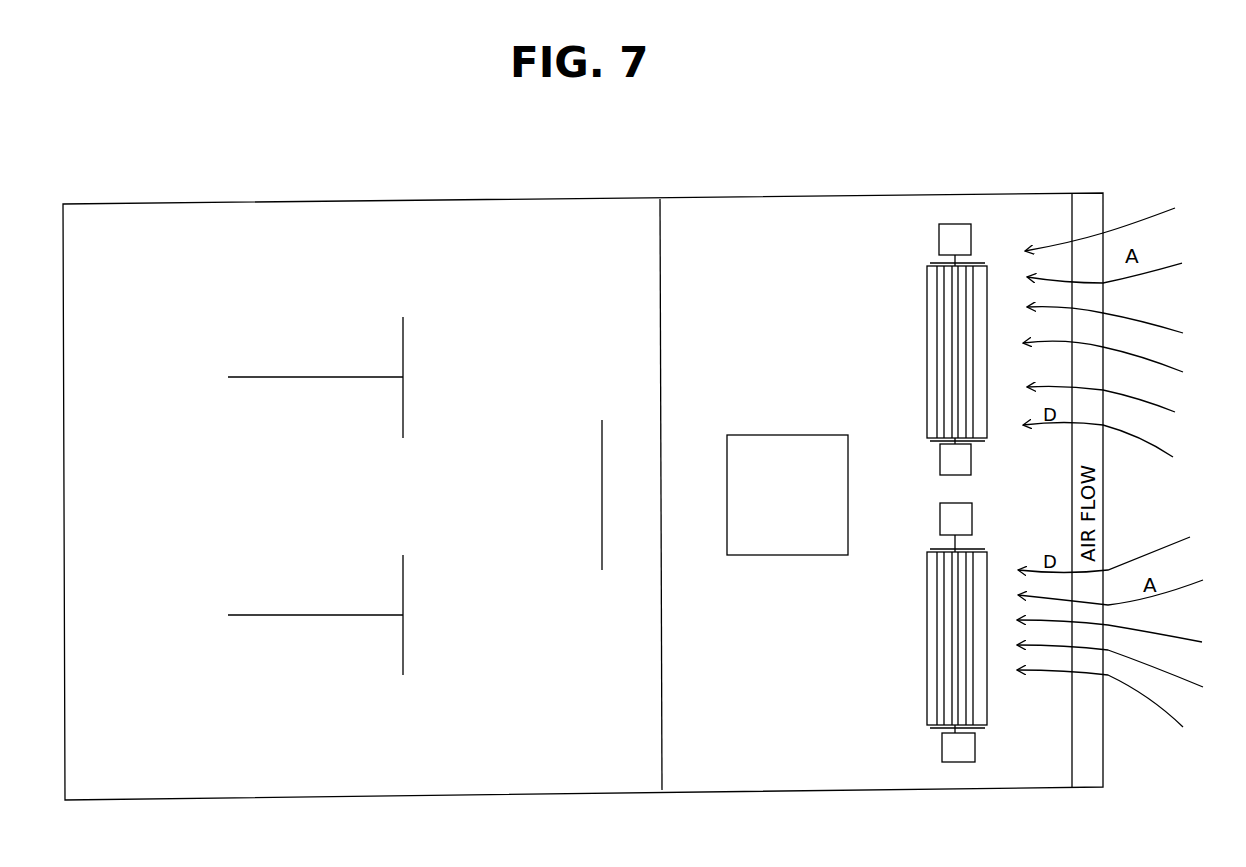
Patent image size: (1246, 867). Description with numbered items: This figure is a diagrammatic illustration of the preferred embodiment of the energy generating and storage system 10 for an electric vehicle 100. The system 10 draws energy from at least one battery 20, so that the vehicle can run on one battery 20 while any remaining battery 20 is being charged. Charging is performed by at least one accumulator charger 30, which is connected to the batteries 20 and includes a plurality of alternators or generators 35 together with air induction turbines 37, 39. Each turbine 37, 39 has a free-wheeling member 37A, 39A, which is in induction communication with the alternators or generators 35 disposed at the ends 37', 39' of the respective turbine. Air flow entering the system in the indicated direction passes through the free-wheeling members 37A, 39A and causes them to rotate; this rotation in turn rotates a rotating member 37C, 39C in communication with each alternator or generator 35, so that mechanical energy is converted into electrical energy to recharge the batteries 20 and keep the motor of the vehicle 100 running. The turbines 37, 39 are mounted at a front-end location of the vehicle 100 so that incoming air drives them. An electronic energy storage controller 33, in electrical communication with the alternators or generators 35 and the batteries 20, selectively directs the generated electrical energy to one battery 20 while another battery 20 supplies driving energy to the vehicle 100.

The energy generating and storage system 10 is at (752, 180).
The battery 20 is at (416, 345).
The accumulator charger 30 is at (923, 495).
The electronic energy storage controller 33 is at (592, 452).
The alternator or generator 35 is at (971, 228).
The air induction turbine 37 is at (952, 351).
The free-wheeling member 37A is at (943, 353).
The rotating member 37C is at (966, 262).
The end of turbine 37' is at (913, 351).
The air induction turbine 39 is at (953, 636).
The free-wheeling member 39A is at (943, 637).
The rotating member 39C is at (935, 544).
The end of turbine 39' is at (994, 636).
The vehicle 100 is at (768, 435).